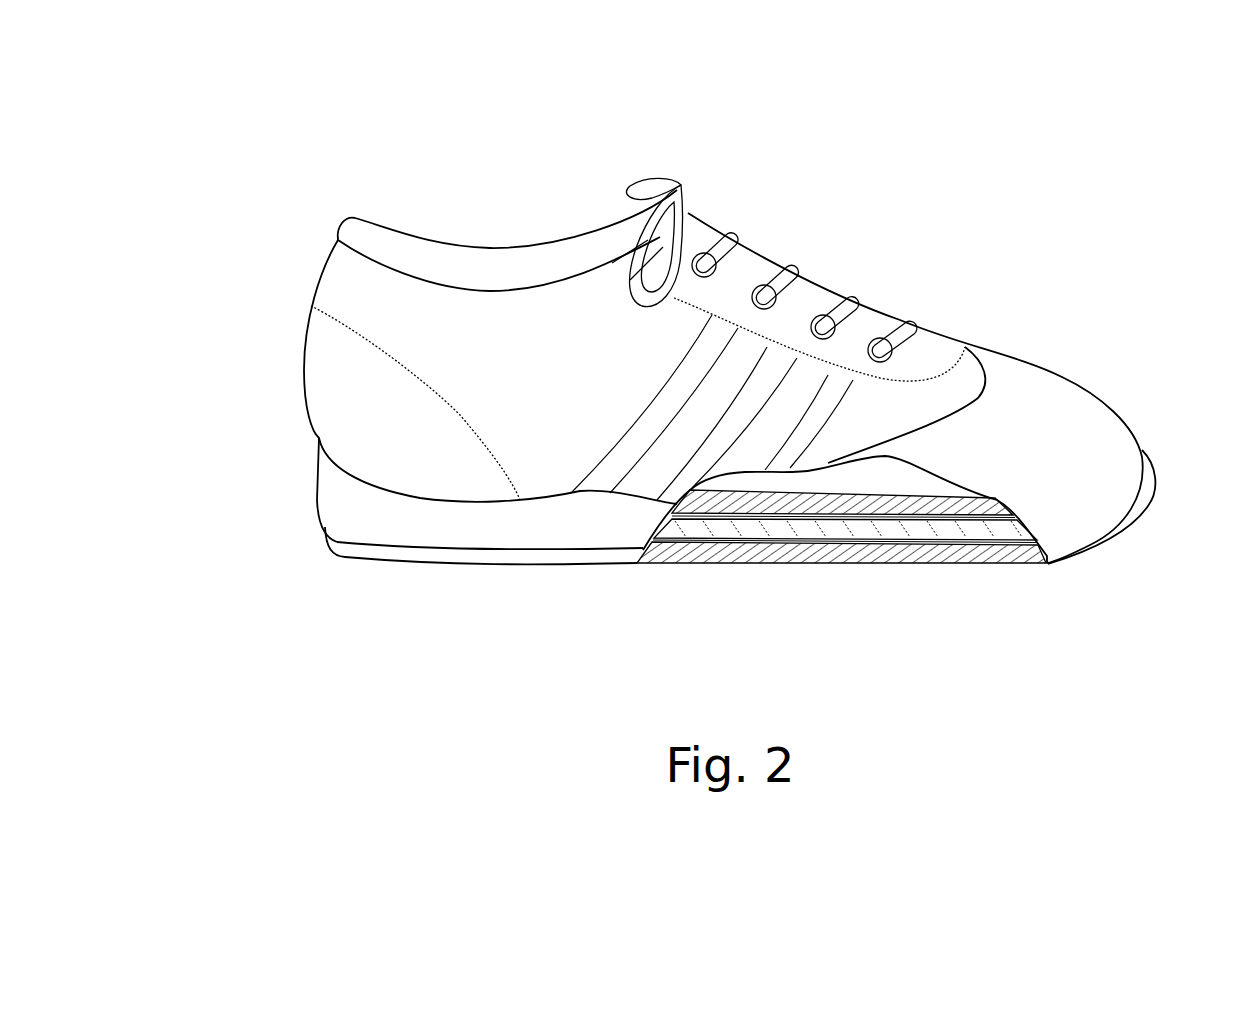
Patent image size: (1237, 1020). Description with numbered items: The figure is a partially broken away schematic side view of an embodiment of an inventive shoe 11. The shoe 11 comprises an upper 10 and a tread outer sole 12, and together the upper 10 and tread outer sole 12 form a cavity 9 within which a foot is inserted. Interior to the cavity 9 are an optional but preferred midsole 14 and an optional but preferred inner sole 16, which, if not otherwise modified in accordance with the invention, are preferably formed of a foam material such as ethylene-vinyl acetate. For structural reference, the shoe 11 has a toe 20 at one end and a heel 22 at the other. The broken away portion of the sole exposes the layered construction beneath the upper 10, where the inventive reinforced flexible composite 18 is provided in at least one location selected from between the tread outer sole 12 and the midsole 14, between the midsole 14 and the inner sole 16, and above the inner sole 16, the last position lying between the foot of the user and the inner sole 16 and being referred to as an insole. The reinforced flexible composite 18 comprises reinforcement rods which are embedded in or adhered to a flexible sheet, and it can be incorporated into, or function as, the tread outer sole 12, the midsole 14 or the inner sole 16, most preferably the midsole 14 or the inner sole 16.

The cavity 9 is at (497, 244).
The upper 10 is at (450, 317).
The shoe 11 is at (807, 255).
The tread outer sole 12 is at (757, 557).
The midsole 14 is at (833, 532).
The inner sole 16 is at (942, 505).
The reinforced flexible composite 18 is at (932, 498).
The toe 20 is at (1140, 515).
The heel 22 is at (318, 498).